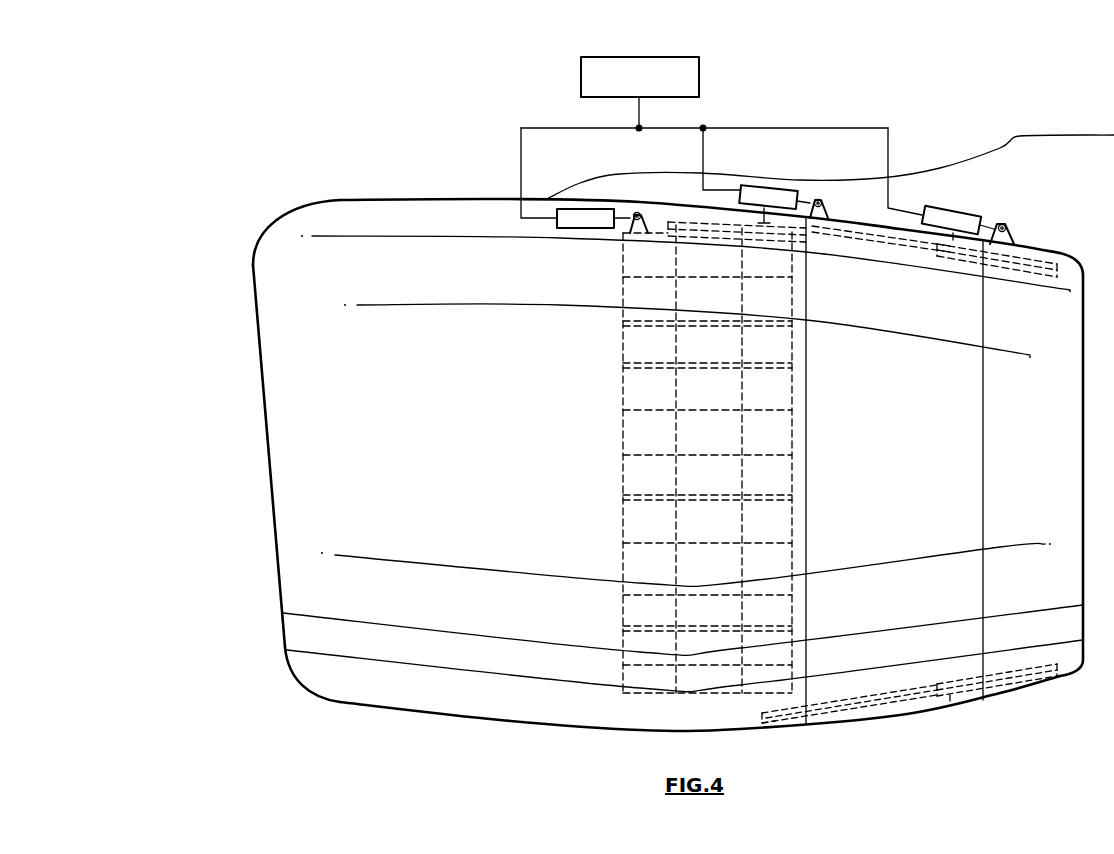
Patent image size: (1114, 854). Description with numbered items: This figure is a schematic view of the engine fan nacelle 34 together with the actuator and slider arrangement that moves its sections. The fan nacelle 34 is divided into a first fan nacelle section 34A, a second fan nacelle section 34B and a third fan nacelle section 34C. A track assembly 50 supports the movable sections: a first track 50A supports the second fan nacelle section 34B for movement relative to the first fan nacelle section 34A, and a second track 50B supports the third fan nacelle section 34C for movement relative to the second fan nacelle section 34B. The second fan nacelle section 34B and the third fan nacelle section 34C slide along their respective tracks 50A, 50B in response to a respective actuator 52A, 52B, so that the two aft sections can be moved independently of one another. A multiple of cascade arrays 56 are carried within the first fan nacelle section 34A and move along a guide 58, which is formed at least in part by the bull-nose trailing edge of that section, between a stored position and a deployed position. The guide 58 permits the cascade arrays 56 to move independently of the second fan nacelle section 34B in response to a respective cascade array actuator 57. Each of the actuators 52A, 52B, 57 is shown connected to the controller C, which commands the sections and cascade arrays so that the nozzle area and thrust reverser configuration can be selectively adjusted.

The controller C is at (648, 57).
The fan nacelle 34 is at (413, 191).
The first fan nacelle section 34A is at (592, 733).
The second fan nacelle section 34B is at (886, 721).
The third fan nacelle section 34C is at (1032, 700).
The track assembly 50 is at (910, 200).
The first track 50A is at (853, 240).
The second track 50B is at (1007, 270).
The actuator 52A is at (765, 198).
The actuator 52B is at (958, 222).
The cascade arrays 56 is at (648, 330).
The cascade array actuator 57 is at (587, 226).
The guide 58 is at (690, 224).